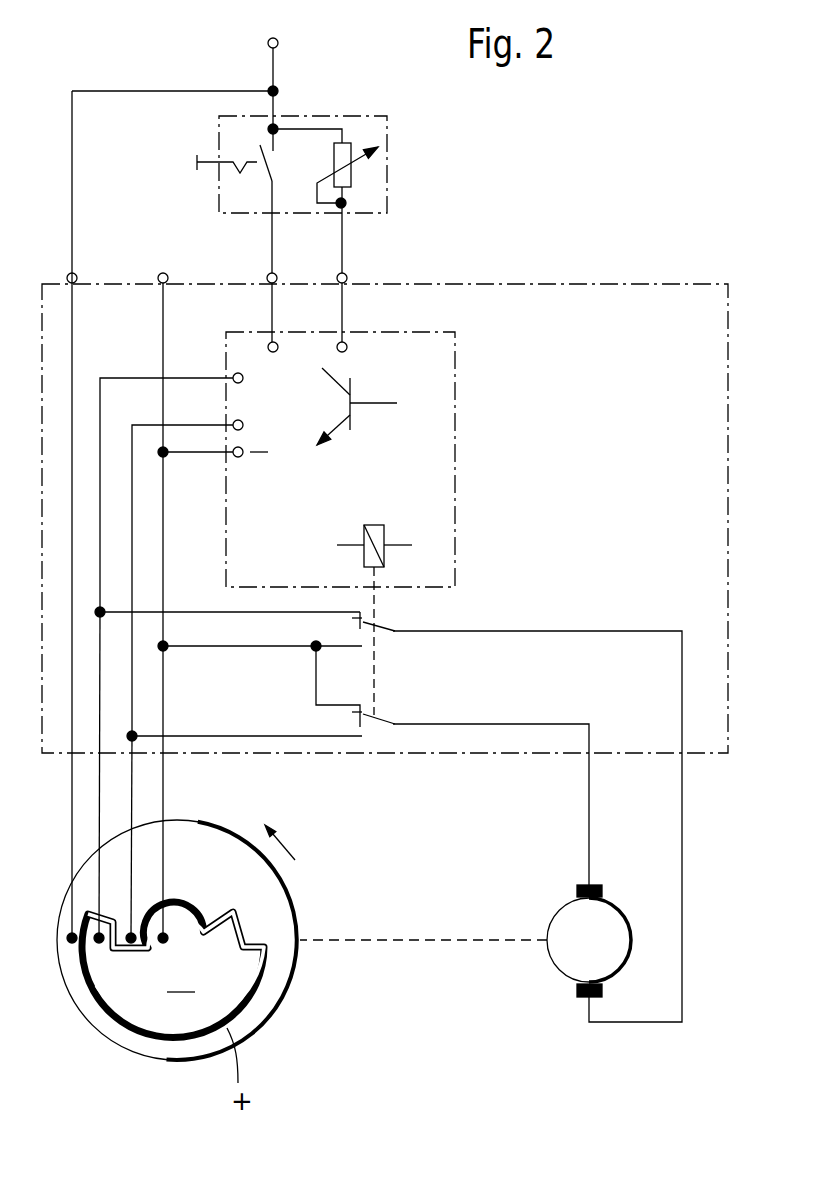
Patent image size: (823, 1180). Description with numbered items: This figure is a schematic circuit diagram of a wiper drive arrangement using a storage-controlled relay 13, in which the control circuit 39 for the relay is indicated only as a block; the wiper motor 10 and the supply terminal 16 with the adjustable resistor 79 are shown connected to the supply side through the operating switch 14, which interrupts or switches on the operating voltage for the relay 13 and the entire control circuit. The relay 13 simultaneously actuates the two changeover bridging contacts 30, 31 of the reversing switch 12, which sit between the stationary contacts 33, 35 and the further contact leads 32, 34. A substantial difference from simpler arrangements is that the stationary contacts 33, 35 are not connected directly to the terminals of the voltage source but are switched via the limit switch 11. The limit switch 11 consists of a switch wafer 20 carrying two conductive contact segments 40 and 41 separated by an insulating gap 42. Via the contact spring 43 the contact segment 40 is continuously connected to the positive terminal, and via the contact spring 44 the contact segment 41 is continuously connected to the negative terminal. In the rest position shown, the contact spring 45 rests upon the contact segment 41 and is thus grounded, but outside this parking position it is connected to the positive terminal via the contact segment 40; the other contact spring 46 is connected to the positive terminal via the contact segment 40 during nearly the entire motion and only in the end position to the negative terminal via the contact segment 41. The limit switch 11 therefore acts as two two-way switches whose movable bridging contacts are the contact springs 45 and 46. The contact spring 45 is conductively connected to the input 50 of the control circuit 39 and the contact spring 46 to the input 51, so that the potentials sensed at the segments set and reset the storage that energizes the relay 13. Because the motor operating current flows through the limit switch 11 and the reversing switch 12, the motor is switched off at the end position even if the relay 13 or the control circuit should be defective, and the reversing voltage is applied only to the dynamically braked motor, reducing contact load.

The electric motor 10 is at (622, 908).
The limit switch 11 is at (108, 1049).
The reversing switch 12 is at (390, 658).
The relay 13 is at (374, 527).
The operating switch 14 is at (275, 167).
The supply terminal 16 is at (163, 272).
The switch wafer 20 is at (279, 1024).
The changeover bridging contact 30 is at (383, 625).
The changeover bridging contact 31 is at (383, 716).
The contact lead 32 is at (336, 645).
The stationary contact 33 is at (333, 610).
The contact lead 34 is at (345, 703).
The stationary contact 35 is at (337, 740).
The control circuit 39 is at (440, 515).
The contact segment 40 is at (77, 1002).
The contact segment 41 is at (181, 977).
The insulating gap 42 is at (264, 941).
The contact spring 43 is at (66, 926).
The contact spring 44 is at (165, 810).
The contact spring 45 is at (98, 825).
The contact spring 46 is at (130, 792).
The input 50 is at (233, 376).
The input 51 is at (236, 422).
The adjustable resistor 79 is at (347, 175).